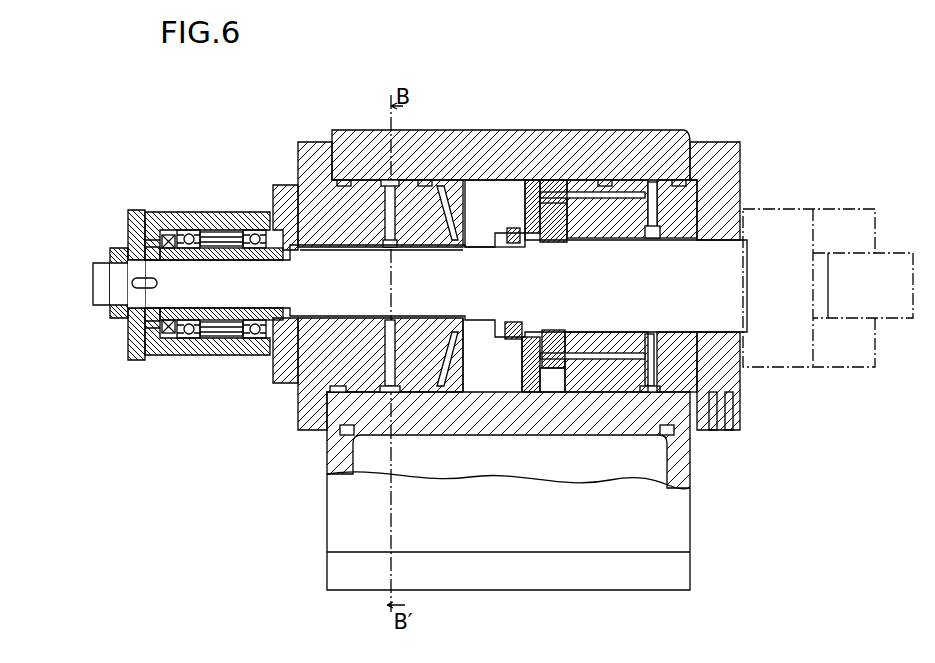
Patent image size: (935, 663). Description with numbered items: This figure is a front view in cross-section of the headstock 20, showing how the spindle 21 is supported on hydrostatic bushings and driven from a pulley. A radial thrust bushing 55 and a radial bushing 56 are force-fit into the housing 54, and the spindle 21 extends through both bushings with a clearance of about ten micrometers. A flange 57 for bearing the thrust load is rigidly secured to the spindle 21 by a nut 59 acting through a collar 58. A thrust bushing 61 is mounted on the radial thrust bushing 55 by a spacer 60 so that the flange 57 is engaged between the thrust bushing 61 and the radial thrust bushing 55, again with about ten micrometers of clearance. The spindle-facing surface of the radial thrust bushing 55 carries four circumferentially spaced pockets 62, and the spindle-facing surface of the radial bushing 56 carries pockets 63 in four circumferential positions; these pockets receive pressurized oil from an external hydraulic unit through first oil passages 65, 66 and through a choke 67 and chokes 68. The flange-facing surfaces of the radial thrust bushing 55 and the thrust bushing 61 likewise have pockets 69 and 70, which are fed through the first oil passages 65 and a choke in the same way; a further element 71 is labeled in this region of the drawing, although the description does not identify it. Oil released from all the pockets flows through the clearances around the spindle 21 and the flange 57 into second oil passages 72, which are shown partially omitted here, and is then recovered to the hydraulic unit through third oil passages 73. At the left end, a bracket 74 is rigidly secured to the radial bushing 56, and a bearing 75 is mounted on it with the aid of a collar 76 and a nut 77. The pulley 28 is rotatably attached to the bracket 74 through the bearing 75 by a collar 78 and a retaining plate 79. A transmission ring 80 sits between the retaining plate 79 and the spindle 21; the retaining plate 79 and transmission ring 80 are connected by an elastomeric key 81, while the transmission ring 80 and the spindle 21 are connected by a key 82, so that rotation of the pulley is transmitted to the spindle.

The headstock 20 is at (473, 260).
The spindle 21 is at (733, 260).
The pulley 28 is at (232, 250).
The housing 54 is at (604, 148).
The radial thrust bushing 55 is at (722, 170).
The radial bushing 56 is at (335, 170).
The flange 57 is at (557, 200).
The collar 58 is at (513, 236).
The nut 59 is at (503, 228).
The spacer 60 is at (563, 345).
The thrust bushing 61 is at (533, 370).
The pockets 62 is at (670, 230).
The pockets 63 is at (285, 205).
The first oil passage 65 is at (650, 182).
The first oil passage 66 is at (385, 180).
The choke 67 is at (642, 197).
The chokes 68 is at (312, 200).
The pocket 69 is at (569, 372).
The pocket 70 is at (545, 200).
The ring 71 is at (530, 215).
The second oil passages 72 is at (258, 355).
The third oil passages 73 is at (325, 390).
The bracket 74 is at (273, 200).
The bearing 75 is at (180, 237).
The collar 76 is at (207, 225).
The nut 77 is at (128, 214).
The collar 78 is at (218, 236).
The retaining plate 79 is at (130, 236).
The transmission ring 80 is at (130, 256).
The elastomeric key 81 is at (133, 243).
The key 82 is at (133, 285).